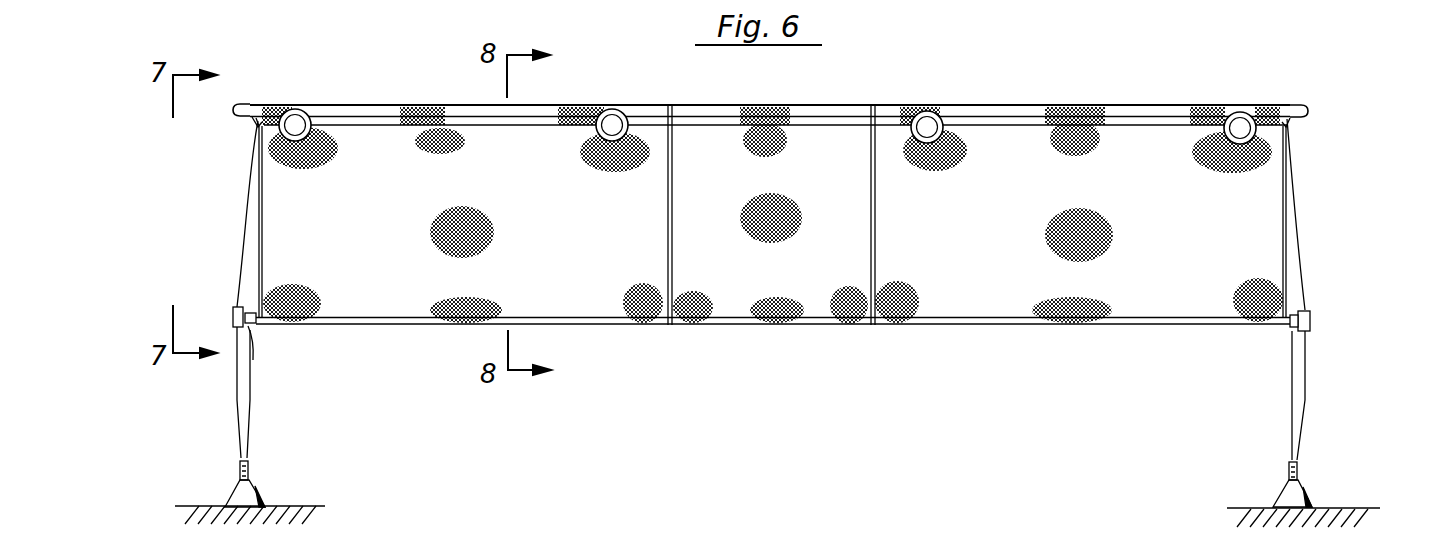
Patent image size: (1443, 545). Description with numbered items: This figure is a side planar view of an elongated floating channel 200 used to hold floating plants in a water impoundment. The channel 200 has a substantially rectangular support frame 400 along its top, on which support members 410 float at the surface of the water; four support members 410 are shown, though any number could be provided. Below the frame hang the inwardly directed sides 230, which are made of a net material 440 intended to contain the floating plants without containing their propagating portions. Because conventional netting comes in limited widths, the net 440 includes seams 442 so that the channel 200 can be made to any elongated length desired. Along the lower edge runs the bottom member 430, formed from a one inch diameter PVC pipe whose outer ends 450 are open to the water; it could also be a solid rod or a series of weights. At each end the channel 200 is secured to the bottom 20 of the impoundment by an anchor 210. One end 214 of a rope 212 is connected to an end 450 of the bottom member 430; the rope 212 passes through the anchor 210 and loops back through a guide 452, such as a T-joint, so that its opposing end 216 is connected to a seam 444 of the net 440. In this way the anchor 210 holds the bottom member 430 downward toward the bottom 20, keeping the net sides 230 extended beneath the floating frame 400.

The bottom 20 is at (312, 505).
The channel 200 is at (1046, 70).
The anchor 210 is at (252, 492).
The rope 212 is at (238, 412).
The one end of the rope 214 is at (261, 366).
The opposing end of the rope 216 is at (238, 190).
The sides 230 is at (772, 215).
The support frame 400 is at (825, 229).
The support members 410 is at (1240, 124).
The bottom member 430 is at (968, 326).
The net material 440 is at (322, 163).
The seams 442 is at (876, 220).
The seam 444 is at (257, 128).
The ends 450 is at (270, 337).
The guide 452 is at (233, 315).